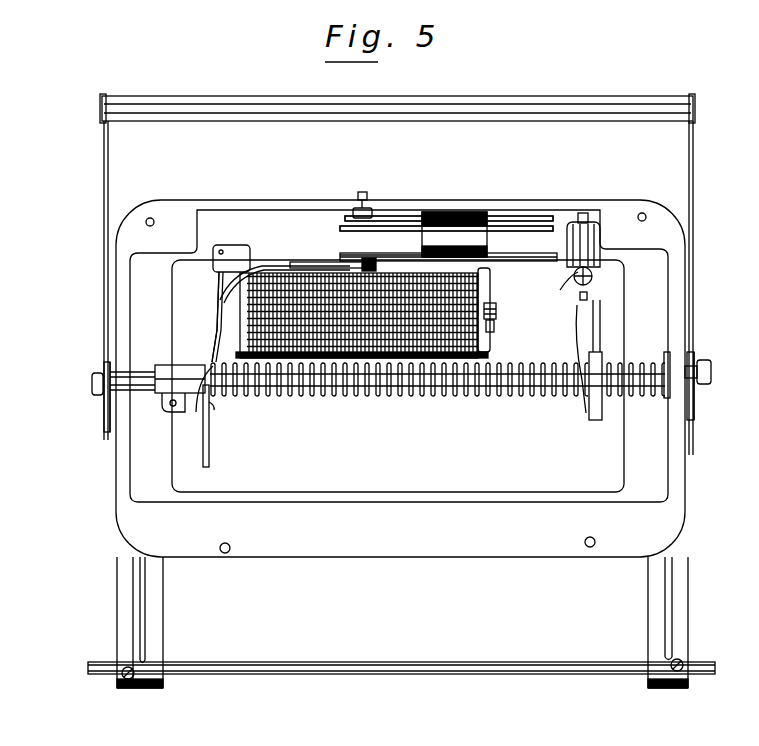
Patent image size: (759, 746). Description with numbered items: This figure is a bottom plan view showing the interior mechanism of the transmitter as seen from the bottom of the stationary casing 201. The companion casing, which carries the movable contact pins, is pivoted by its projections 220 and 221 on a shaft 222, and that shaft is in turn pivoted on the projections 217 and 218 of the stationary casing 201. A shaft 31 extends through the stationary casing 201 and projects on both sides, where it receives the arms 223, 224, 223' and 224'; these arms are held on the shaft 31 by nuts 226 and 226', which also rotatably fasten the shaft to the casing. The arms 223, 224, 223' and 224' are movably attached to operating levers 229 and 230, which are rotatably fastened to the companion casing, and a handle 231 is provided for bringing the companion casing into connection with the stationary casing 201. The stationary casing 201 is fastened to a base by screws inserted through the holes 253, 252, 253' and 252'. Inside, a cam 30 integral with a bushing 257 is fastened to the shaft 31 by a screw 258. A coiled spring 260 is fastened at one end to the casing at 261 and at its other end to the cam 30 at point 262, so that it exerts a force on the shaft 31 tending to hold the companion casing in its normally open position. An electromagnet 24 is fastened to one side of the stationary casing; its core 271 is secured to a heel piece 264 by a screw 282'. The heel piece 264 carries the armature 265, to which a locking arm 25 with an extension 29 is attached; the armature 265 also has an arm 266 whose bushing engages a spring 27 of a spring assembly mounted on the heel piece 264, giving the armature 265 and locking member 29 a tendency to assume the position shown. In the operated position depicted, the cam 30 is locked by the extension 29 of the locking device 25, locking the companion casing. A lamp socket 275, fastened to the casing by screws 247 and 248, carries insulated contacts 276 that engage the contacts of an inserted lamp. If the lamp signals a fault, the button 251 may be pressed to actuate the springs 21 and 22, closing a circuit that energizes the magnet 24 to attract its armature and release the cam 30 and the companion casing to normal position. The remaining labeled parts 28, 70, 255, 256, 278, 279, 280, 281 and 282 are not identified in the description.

The stationary casing 201 is at (291, 205).
The spring 21 is at (350, 219).
The spring 22 is at (352, 229).
The electromagnet 24 is at (478, 351).
The locking arm 25 is at (221, 300).
The spring 27 is at (405, 245).
The rod 28 is at (355, 264).
The extension 29 is at (193, 396).
The cam 30 is at (210, 456).
The shaft 31 is at (143, 371).
The lever 70 is at (216, 346).
The projection 217 is at (158, 606).
The projection 218 is at (655, 616).
The projection 220 is at (125, 607).
The projection 221 is at (680, 616).
The shaft 222 is at (362, 663).
The arm 223 is at (723, 390).
The arm 224 is at (723, 402).
The nut 226 is at (722, 378).
The nut 226' is at (80, 369).
The arm 223' is at (84, 397).
The arm 224' is at (84, 406).
The operating lever 229 is at (693, 174).
The operating lever 230 is at (108, 174).
The handle 231 is at (350, 122).
The screw 247 is at (600, 298).
The screw 248 is at (600, 276).
The button 251 is at (368, 196).
The hole 252 is at (172, 201).
The hole 252' is at (249, 564).
The hole 253 is at (625, 225).
The hole 253' is at (567, 559).
The screw 255 is at (122, 671).
The screw 256 is at (683, 662).
The bushing 257 is at (196, 360).
The screw 258 is at (172, 406).
The coiled spring 260 is at (360, 398).
The casing attachment point 261 is at (665, 355).
The cam attachment point 262 is at (213, 406).
The heel piece 264 is at (485, 285).
The armature 265 is at (217, 317).
The arm 266 is at (270, 266).
The core 271 is at (491, 331).
The lamp socket 275 is at (568, 273).
The contacts 276 is at (590, 340).
The rod 278 is at (520, 216).
The block 279 is at (535, 226).
The rod 280 is at (566, 257).
The rod 281 is at (545, 259).
The frame 282 is at (423, 361).
The screw 282' is at (515, 310).